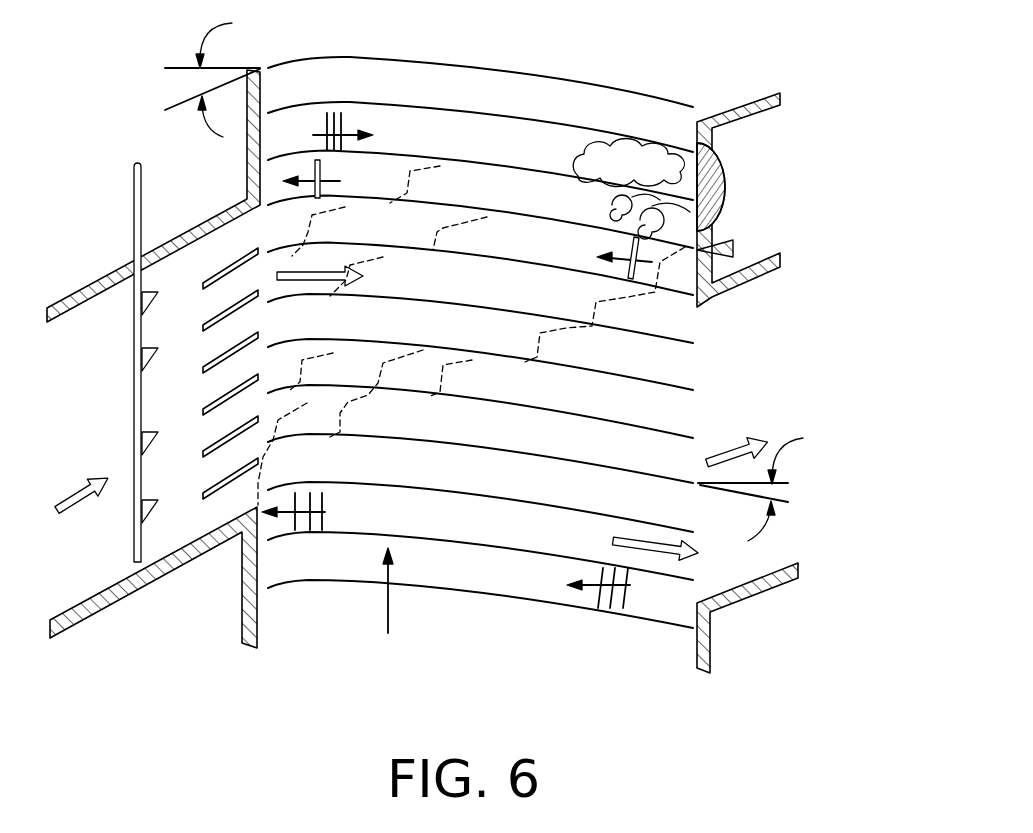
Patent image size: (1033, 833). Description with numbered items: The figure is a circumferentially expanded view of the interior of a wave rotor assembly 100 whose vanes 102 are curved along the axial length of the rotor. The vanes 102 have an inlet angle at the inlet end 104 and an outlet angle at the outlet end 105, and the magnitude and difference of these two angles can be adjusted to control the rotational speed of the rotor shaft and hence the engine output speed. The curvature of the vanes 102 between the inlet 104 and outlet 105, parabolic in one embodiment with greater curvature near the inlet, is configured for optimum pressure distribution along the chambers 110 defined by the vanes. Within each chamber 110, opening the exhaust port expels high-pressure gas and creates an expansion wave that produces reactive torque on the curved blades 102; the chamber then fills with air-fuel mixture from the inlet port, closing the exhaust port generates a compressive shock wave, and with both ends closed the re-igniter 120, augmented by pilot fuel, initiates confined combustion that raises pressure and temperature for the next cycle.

The wave rotor assembly 100 is at (460, 352).
The vanes 102 is at (463, 63).
The inlet end 104 is at (277, 318).
The outlet end 105 is at (700, 325).
The chambers 110 is at (597, 103).
The re-igniter 120 is at (802, 162).